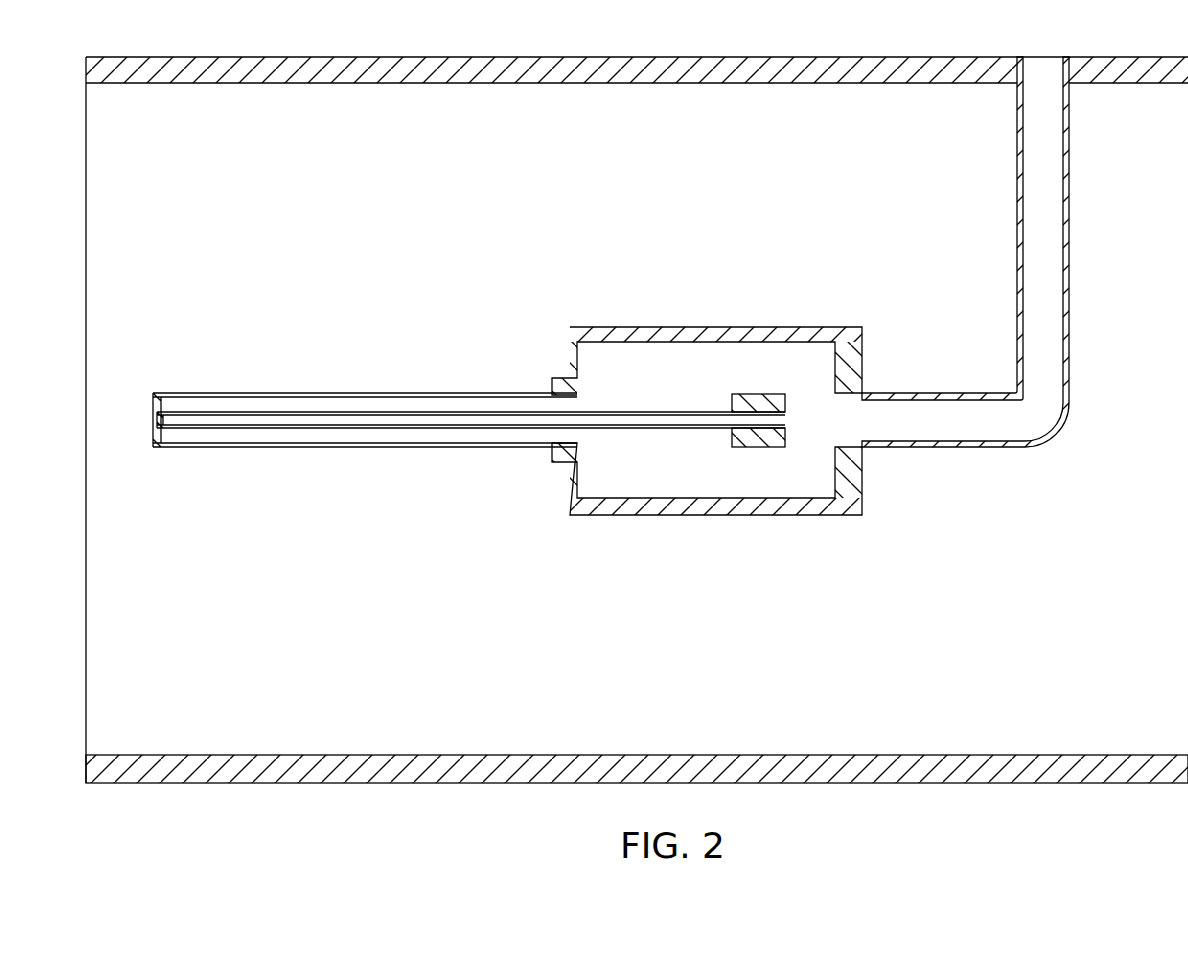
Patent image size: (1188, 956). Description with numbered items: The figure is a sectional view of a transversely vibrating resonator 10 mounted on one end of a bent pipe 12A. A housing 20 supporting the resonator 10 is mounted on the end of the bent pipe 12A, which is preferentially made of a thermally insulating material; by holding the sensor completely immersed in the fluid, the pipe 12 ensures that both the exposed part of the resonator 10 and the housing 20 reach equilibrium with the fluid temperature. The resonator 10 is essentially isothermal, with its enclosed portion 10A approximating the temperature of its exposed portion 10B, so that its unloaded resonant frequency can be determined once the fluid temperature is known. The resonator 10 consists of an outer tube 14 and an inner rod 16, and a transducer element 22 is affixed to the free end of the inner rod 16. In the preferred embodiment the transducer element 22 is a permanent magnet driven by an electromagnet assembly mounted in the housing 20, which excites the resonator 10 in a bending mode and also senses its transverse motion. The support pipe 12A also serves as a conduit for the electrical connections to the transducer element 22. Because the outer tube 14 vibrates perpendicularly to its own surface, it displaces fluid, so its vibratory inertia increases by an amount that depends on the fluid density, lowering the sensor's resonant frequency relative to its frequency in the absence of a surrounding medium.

The transversely vibrating resonator 10 is at (449, 325).
The enclosed portion 10A is at (644, 439).
The exposed portion 10B is at (429, 452).
The pipe 12 is at (782, 57).
The bent pipe 12A is at (1053, 430).
The outer tube 14 is at (275, 437).
The inner rod 16 is at (313, 418).
The housing 20 is at (771, 326).
The transducer element 22 is at (759, 448).